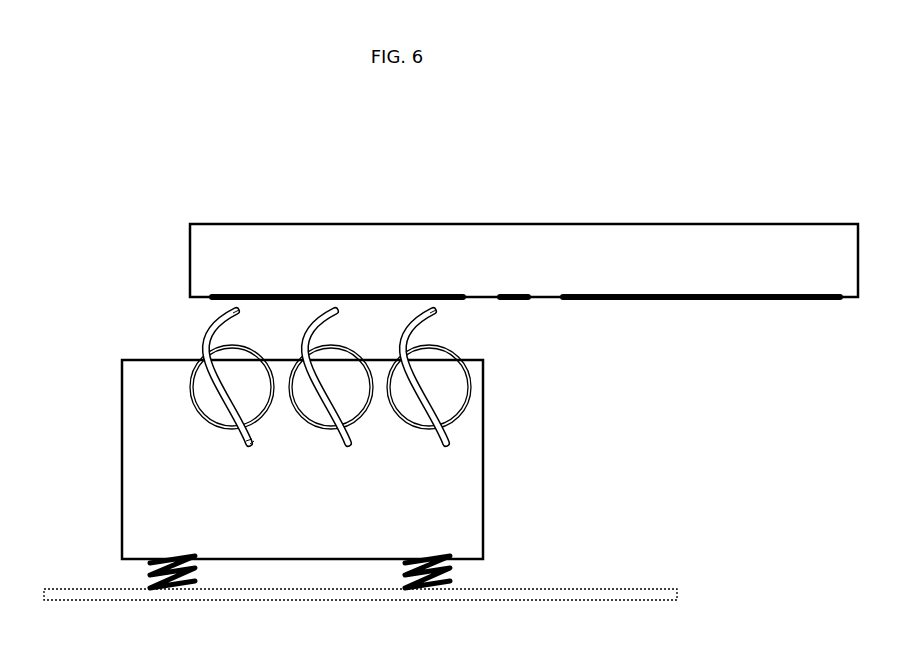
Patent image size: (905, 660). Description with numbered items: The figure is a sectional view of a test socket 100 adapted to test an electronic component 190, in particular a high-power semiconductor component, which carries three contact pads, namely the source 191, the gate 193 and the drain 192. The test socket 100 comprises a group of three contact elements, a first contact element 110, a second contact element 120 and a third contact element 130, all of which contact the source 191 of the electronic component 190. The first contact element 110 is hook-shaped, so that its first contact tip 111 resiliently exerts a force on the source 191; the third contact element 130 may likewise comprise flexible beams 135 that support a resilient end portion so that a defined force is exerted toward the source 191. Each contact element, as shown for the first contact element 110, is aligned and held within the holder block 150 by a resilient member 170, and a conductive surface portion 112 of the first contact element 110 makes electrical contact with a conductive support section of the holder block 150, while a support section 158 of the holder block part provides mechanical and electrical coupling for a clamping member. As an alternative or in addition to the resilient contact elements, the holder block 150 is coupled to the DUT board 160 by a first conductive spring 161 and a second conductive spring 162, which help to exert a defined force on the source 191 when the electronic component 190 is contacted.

The test socket 100 is at (113, 295).
The first contact element 110 is at (207, 340).
The first contact tip 111 is at (236, 310).
The conductive surface portion 112 is at (250, 438).
The second contact element 120 is at (312, 352).
The third contact element 130 is at (404, 344).
The flexible beams 135 is at (414, 321).
The holder block 150 is at (326, 525).
The support section 158 is at (255, 442).
The DUT board 160 is at (617, 590).
The first conductive spring 161 is at (147, 573).
The second conductive spring 162 is at (452, 571).
The resilient member 170 is at (210, 403).
The electronic component 190 is at (765, 245).
The source 191 is at (380, 297).
The drain 192 is at (633, 297).
The gate 193 is at (520, 297).